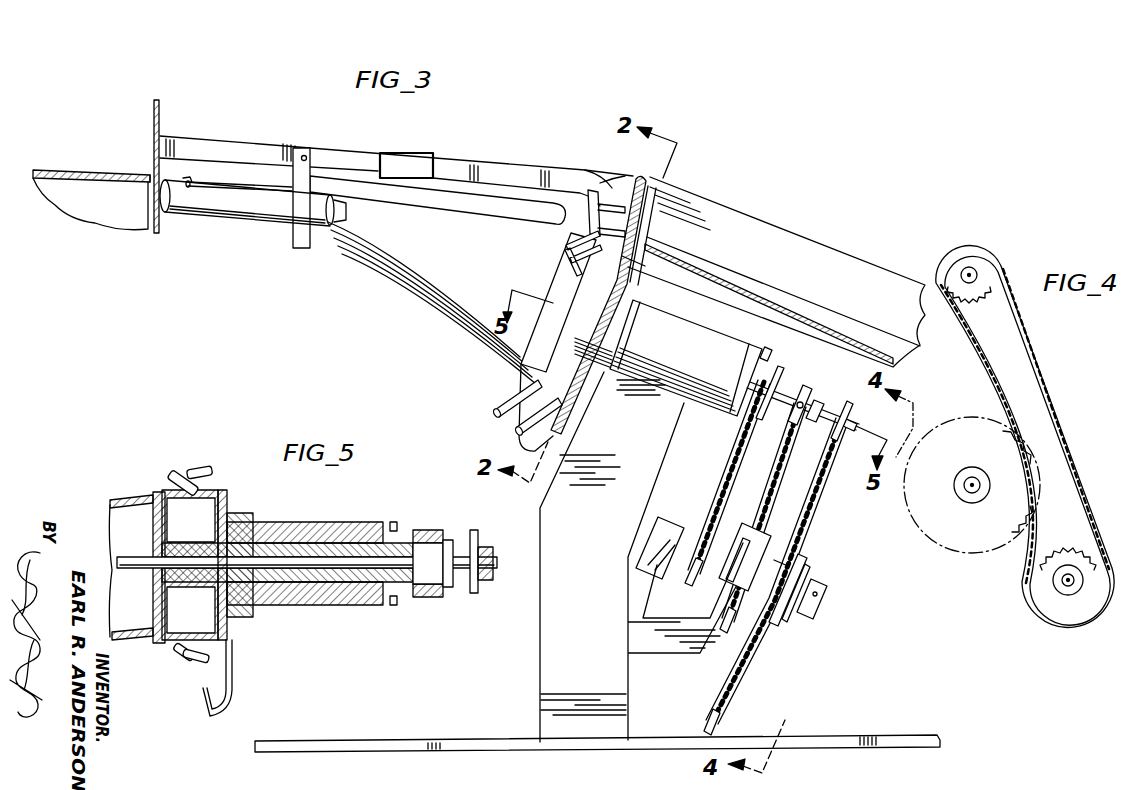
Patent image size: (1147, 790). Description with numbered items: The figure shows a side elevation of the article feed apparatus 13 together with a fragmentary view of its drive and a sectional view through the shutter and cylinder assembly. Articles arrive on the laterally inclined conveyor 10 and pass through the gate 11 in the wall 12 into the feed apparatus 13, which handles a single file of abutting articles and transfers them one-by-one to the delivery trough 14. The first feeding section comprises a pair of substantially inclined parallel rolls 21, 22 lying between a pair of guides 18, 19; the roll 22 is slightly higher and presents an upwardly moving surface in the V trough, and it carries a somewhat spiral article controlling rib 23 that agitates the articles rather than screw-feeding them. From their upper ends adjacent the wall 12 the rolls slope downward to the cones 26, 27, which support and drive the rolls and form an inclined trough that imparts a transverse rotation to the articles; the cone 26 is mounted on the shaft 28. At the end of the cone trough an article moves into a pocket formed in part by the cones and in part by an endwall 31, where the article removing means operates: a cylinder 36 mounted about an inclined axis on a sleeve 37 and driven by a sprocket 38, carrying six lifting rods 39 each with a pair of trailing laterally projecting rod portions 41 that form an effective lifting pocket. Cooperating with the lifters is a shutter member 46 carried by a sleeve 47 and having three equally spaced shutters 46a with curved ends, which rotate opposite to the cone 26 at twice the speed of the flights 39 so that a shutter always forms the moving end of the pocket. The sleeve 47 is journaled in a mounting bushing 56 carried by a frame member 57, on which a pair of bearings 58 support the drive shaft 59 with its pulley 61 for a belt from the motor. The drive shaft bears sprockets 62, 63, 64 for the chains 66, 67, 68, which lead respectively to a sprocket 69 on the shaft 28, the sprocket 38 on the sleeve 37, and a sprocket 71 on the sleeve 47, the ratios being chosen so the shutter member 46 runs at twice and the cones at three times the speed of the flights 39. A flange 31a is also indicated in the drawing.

In FIG. 3, the laterally inclined conveyor 10 is at (90, 168).
In FIG. 3, the opening or gate 11 is at (152, 168).
In FIG. 3, the wall 12 is at (160, 110).
In FIG. 3, the feed apparatus 13 is at (456, 152).
In FIG. 3, the delivery trough 14 is at (803, 247).
In FIG. 3, the guide 18 is at (512, 173).
In FIG. 3, the guide 19 is at (382, 160).
In FIG. 3, the roll 21 is at (268, 207).
In FIG. 3, the roll 22 is at (243, 183).
In FIG. 3, the article controlling rib 23 is at (200, 181).
In FIG. 3, the cone 26 is at (447, 297).
In FIG. 5, the cone 26 is at (135, 505).
In FIG. 3, the cone 27 is at (478, 203).
In FIG. 3, the shaft 28 is at (843, 433).
In FIG. 4, the shaft 28 is at (968, 268).
In FIG. 5, the shaft 28 is at (462, 570).
In FIG. 3, the endwall 31 is at (632, 275).
In FIG. 5, the endwall 31 is at (240, 515).
In FIG. 3, the flange 31a is at (612, 188).
In FIG. 3, the cylinder 36 is at (517, 375).
In FIG. 5, the cylinder 36 is at (170, 495).
In FIG. 3, the sleeve 37 is at (787, 427).
In FIG. 5, the sleeve 37 is at (450, 532).
In FIG. 3, the sprocket 38 is at (808, 376).
In FIG. 5, the sprocket 38 is at (422, 522).
In FIG. 3, the rods 39 is at (495, 412).
In FIG. 5, the rods 39 is at (183, 466).
In FIG. 3, the laterally projecting rod portions 41 is at (517, 430).
In FIG. 5, the laterally projecting rod portions 41 is at (212, 468).
In FIG. 3, the shutter member 46 is at (568, 382).
In FIG. 5, the shutter member 46 is at (226, 495).
In FIG. 3, the shutters 46a is at (608, 342).
In FIG. 5, the shutters 46a is at (214, 712).
In FIG. 3, the sleeve 47 is at (800, 356).
In FIG. 5, the sleeve 47 is at (333, 540).
In FIG. 3, the mounting bushing 56 is at (700, 392).
In FIG. 5, the mounting bushing 56 is at (280, 522).
In FIG. 3, the frame member 57 is at (552, 679).
In FIG. 3, the bearings 58 is at (658, 518).
In FIG. 3, the drive shaft 59 is at (827, 603).
In FIG. 4, the drive shaft 59 is at (970, 487).
In FIG. 3, the pulley 61 is at (805, 570).
In FIG. 3, the sprocket 62 is at (787, 555).
In FIG. 4, the sprocket 62 is at (947, 520).
In FIG. 3, the sprocket 63 is at (733, 550).
In FIG. 3, the sprocket 64 is at (680, 583).
In FIG. 3, the chain 66 is at (828, 495).
In FIG. 4, the chain 66 is at (1068, 434).
In FIG. 3, the chain 67 is at (757, 482).
In FIG. 3, the chain 68 is at (723, 462).
In FIG. 3, the sprocket 69 is at (840, 392).
In FIG. 4, the sprocket 69 is at (990, 258).
In FIG. 5, the sprocket 69 is at (488, 534).
In FIG. 3, the sprocket 71 is at (766, 346).
In FIG. 5, the sprocket 71 is at (393, 522).